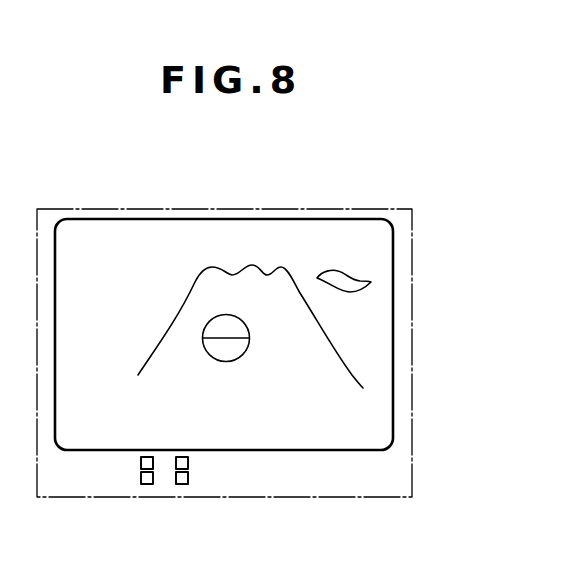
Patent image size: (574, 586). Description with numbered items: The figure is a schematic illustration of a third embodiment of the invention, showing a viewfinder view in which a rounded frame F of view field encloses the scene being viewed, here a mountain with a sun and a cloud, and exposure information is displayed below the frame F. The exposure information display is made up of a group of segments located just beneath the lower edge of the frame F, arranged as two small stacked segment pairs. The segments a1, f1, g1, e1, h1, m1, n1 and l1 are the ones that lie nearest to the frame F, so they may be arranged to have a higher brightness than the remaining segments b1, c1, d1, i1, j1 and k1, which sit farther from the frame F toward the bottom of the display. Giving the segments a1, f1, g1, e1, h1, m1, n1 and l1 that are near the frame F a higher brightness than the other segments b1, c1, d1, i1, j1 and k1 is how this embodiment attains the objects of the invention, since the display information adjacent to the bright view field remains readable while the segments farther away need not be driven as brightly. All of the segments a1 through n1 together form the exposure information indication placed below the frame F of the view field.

The frame of view field F is at (393, 255).
The segment a1 is at (141, 459).
The segment b1 is at (141, 478).
The segment c1 is at (146, 484).
The segment d1 is at (152, 484).
The segment e1 is at (152, 457).
The segment f1 is at (147, 457).
The segment g1 is at (141, 464).
The segment h1 is at (177, 457).
The segment i1 is at (175, 484).
The segment j1 is at (182, 484).
The segment k1 is at (189, 484).
The segment l1 is at (188, 465).
The segment m1 is at (186, 457).
The segment n1 is at (188, 478).